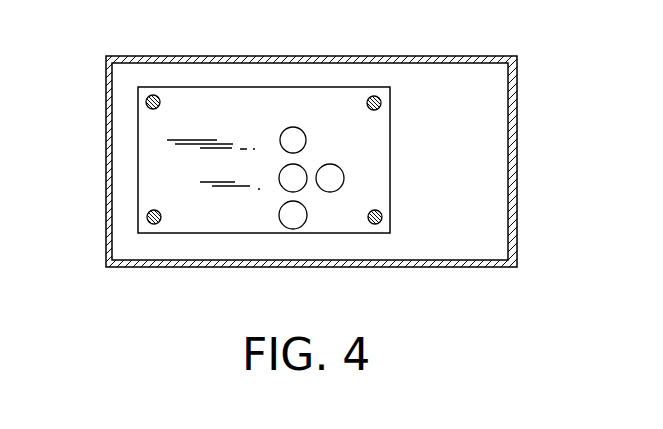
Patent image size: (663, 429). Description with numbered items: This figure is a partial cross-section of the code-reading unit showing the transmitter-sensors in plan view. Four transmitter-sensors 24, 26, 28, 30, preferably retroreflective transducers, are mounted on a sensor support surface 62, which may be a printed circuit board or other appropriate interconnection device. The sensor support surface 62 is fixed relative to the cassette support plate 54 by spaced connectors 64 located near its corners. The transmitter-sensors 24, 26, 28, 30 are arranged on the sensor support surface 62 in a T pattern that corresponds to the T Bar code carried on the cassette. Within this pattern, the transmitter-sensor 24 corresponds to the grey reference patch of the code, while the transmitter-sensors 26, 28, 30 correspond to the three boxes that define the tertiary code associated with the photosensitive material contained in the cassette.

The cassette support plate 54 is at (515, 132).
The sensor support surface 62 is at (380, 130).
The spaced connectors 64 is at (147, 102).
The transmitter-sensor 30 is at (283, 137).
The transmitter-sensor 28 is at (283, 180).
The transmitter-sensor 24 is at (332, 187).
The transmitter-sensor 26 is at (293, 218).